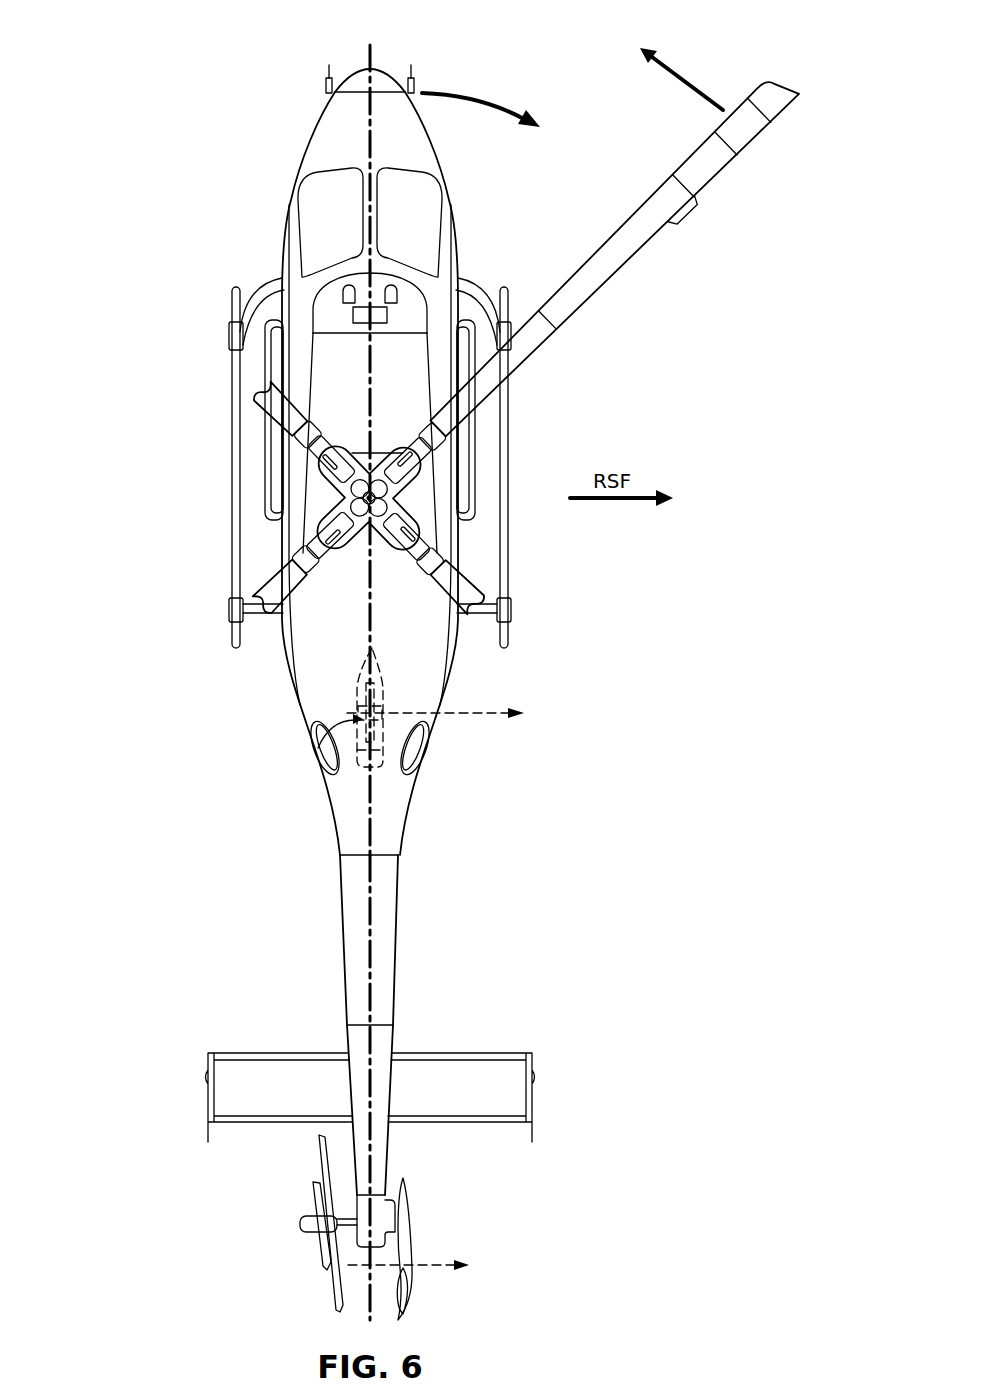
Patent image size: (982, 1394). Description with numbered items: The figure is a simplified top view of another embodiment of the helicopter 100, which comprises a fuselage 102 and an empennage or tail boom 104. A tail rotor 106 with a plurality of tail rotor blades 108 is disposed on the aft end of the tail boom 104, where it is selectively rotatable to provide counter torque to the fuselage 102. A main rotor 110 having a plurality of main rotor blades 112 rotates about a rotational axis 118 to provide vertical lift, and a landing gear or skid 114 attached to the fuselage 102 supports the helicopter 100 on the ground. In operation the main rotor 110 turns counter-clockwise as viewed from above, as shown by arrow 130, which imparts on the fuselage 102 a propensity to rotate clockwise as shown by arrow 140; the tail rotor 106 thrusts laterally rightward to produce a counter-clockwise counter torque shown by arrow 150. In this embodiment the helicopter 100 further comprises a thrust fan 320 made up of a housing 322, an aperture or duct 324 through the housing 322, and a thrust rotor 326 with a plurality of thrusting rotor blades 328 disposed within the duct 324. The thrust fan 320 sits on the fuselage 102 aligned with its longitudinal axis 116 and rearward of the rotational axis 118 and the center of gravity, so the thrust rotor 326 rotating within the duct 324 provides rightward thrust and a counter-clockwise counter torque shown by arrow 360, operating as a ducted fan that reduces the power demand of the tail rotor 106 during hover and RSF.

The helicopter 100 is at (118, 62).
The fuselage 102 is at (384, 70).
The tail boom 104 is at (398, 935).
The tail rotor 106 is at (295, 1237).
The tail rotor blades 108 is at (320, 1157).
The main rotor 110 is at (352, 440).
The main rotor blades 112 is at (720, 187).
The skid 114 is at (508, 546).
The longitudinal axis 116 is at (368, 882).
The rotational axis 118 is at (362, 499).
The arrow 130 is at (695, 80).
The arrow 140 is at (472, 100).
The arrow 150 is at (437, 1266).
The thrust fan 320 is at (354, 649).
The housing 322 is at (372, 647).
The duct 324 is at (370, 769).
The thrust rotor 326 is at (312, 758).
The thrusting rotor blades 328 is at (350, 697).
The arrow 360 is at (474, 716).